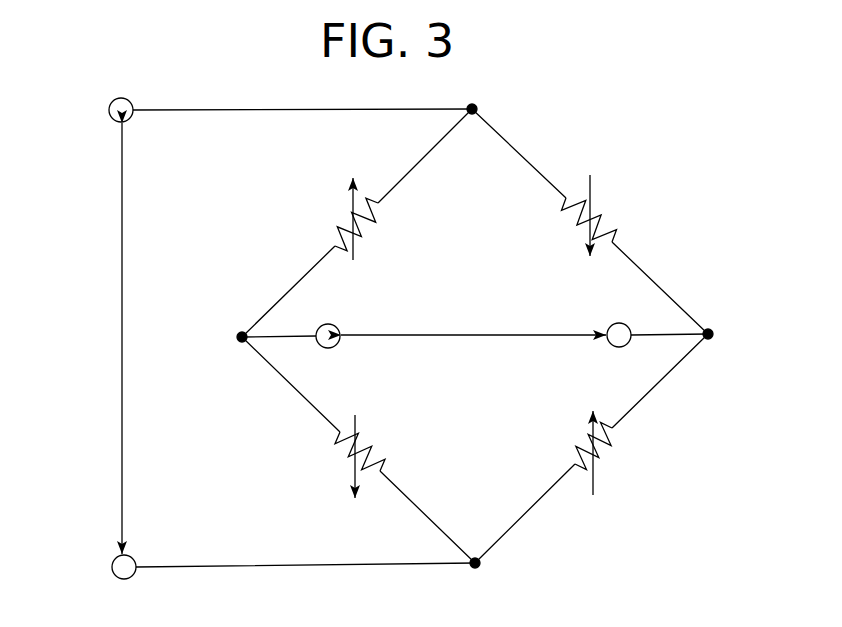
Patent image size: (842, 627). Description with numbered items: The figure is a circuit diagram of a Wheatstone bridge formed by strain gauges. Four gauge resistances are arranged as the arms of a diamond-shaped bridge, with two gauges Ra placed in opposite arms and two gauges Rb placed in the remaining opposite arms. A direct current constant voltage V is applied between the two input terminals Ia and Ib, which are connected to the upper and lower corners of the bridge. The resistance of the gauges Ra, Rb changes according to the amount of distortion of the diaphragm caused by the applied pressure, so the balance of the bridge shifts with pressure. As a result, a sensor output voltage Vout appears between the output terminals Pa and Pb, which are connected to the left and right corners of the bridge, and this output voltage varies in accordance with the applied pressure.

The input terminal Ia is at (112, 102).
The input terminal Ib is at (112, 566).
The direct current constant voltage V is at (101, 338).
The output terminal Pa is at (332, 324).
The output terminal Pb is at (610, 326).
The sensor output voltage Vout is at (473, 319).
The gauge Ra is at (337, 214).
The gauge Rb is at (596, 212).